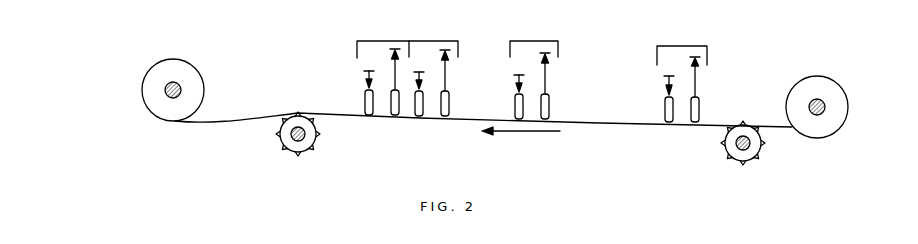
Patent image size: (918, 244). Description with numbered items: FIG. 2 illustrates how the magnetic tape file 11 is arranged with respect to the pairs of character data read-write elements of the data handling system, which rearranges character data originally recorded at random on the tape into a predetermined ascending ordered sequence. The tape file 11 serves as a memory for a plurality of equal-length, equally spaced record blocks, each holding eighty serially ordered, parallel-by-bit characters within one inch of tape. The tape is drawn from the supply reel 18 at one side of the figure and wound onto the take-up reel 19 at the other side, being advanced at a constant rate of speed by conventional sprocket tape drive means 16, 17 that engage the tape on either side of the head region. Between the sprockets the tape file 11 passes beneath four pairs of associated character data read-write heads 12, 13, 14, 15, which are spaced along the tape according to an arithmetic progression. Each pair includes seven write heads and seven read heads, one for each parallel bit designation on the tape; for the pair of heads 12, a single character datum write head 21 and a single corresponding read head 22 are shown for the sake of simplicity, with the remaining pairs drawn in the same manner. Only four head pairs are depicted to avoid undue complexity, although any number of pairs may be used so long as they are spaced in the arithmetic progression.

The magnetic tape file 11 is at (612, 124).
The pair of associated character data read-write heads 12 is at (383, 41).
The pair of associated character data read-write heads 13 is at (433, 41).
The pair of associated character data read-write heads 14 is at (534, 41).
The pair of associated character data read-write heads 15 is at (682, 46).
The sprocket tape drive means 16 is at (305, 152).
The sprocket tape drive means 17 is at (748, 162).
The supply reel 18 is at (794, 85).
The take-up reel 19 is at (199, 76).
The character datum write head 21 is at (365, 104).
The read head 22 is at (391, 111).